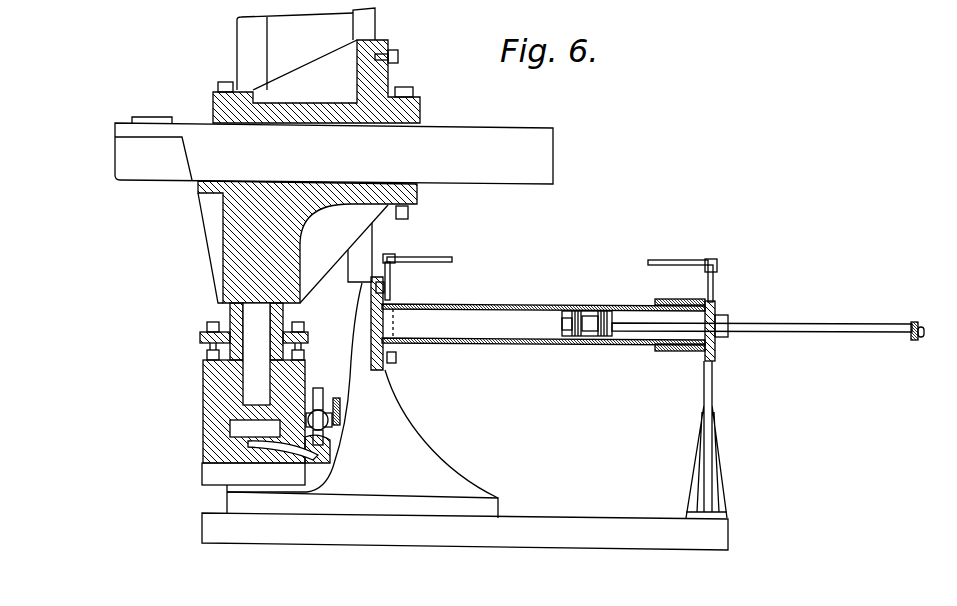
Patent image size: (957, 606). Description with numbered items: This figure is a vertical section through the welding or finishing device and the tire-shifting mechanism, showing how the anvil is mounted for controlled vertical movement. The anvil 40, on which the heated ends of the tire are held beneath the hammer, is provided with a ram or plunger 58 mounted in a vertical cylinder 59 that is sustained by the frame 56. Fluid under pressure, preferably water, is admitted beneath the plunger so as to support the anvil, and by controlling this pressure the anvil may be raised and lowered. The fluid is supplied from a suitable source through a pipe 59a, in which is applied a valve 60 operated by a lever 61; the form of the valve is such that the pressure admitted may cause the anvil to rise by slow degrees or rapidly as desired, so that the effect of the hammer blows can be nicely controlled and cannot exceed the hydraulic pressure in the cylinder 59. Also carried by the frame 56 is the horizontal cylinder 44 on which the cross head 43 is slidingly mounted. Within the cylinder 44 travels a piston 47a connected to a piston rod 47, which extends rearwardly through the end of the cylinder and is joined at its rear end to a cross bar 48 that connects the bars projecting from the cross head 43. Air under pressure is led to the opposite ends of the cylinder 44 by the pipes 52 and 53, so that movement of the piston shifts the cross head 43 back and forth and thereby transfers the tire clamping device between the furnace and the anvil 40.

The anvil 40 is at (120, 150).
The cross head 43 is at (662, 303).
The horizontal cylinder 44 is at (558, 304).
The piston rod 47 is at (752, 331).
The piston 47a is at (572, 344).
The cross bar 48 is at (912, 325).
The pipe 52 is at (677, 262).
The pipe 53 is at (433, 257).
The frame 56 is at (247, 38).
The ram or plunger 58 is at (230, 316).
The vertical cylinder 59 is at (205, 412).
The pipe 59a is at (320, 388).
The valve 60 is at (326, 417).
The lever 61 is at (340, 408).